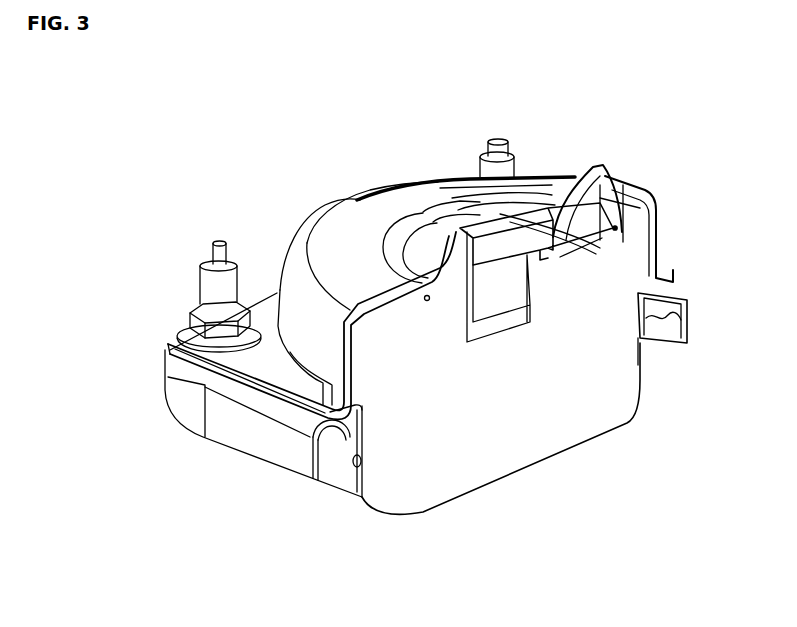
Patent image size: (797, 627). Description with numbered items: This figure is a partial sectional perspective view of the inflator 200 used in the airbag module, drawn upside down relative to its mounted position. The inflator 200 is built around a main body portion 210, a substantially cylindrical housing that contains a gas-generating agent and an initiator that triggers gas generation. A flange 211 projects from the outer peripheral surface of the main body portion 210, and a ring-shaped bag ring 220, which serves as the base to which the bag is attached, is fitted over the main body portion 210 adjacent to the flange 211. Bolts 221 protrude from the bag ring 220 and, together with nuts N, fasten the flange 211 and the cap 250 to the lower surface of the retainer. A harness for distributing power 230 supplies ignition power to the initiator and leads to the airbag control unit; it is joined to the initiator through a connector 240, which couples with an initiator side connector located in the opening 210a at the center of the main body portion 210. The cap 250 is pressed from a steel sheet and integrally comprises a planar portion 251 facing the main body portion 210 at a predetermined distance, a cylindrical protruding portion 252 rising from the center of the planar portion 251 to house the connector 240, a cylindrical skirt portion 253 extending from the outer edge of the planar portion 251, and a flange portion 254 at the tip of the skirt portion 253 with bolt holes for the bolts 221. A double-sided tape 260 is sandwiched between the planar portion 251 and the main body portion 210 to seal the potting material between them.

The inflator 200 is at (172, 148).
The main body portion 210 is at (425, 500).
The opening 210a is at (455, 235).
The flange 211 is at (317, 483).
The bag ring 220 is at (228, 437).
The bolts 221 is at (205, 268).
The nuts N is at (193, 318).
The harness for distributing power 230 is at (607, 173).
The connector 240 is at (533, 232).
The cap 250 is at (298, 208).
The planar portion 251 is at (346, 226).
The protruding portion 252 is at (425, 218).
The skirt portion 253 is at (293, 347).
The flange portion 254 is at (193, 343).
The double-sided tape 260 is at (428, 298).